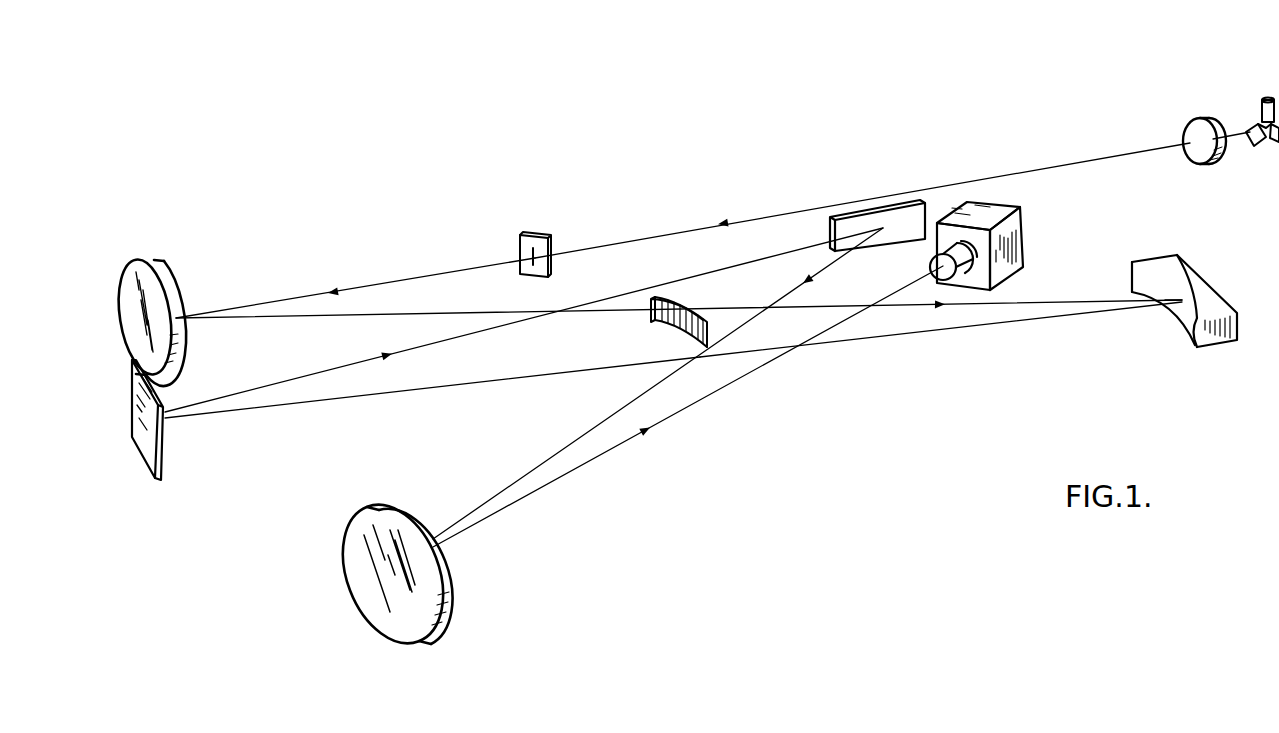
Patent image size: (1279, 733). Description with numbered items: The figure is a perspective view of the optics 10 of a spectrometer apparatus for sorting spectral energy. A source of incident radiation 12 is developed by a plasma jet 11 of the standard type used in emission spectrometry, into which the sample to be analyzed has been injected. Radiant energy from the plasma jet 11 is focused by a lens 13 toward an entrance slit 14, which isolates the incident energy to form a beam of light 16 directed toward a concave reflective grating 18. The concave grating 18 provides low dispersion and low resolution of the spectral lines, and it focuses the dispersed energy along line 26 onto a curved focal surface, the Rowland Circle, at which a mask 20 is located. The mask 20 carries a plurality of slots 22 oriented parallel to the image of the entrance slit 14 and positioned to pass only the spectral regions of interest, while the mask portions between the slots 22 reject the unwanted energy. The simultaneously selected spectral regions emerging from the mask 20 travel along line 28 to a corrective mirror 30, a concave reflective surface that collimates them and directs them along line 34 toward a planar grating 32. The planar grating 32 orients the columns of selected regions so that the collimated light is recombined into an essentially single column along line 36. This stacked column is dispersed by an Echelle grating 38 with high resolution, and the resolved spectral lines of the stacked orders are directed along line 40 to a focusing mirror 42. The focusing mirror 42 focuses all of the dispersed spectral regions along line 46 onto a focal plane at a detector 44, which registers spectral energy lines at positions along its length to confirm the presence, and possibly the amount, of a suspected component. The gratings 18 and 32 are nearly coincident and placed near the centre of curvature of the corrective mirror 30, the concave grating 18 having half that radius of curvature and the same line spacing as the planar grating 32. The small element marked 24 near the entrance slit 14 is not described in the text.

The optics 10 is at (823, 459).
The plasma jet 11 is at (1265, 90).
The source of incident radiation 12 is at (1025, 172).
The lens 13 is at (1197, 125).
The entrance slit 14 is at (522, 229).
The beam of light 16 is at (378, 283).
The concave reflective grating 18 is at (162, 278).
The mask 20 is at (683, 304).
The slots 22 is at (672, 325).
The slit 24 is at (540, 263).
The line 26 is at (420, 317).
The line 28 is at (1017, 304).
The corrective mirror 30 is at (1197, 285).
The planar grating 32 is at (167, 448).
The line 34 is at (433, 392).
The line 36 is at (322, 371).
The Echelle grating 38 is at (905, 215).
The line 40 is at (817, 271).
The focusing mirror 42 is at (447, 568).
The detector 44 is at (992, 229).
The line 46 is at (622, 446).